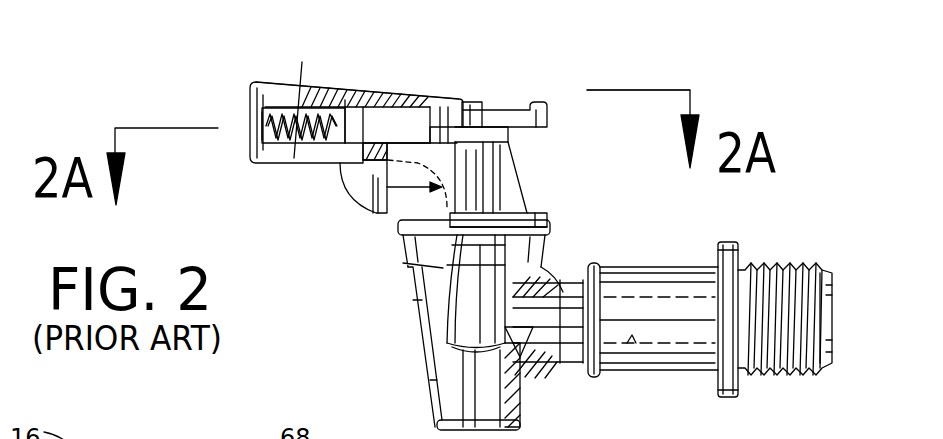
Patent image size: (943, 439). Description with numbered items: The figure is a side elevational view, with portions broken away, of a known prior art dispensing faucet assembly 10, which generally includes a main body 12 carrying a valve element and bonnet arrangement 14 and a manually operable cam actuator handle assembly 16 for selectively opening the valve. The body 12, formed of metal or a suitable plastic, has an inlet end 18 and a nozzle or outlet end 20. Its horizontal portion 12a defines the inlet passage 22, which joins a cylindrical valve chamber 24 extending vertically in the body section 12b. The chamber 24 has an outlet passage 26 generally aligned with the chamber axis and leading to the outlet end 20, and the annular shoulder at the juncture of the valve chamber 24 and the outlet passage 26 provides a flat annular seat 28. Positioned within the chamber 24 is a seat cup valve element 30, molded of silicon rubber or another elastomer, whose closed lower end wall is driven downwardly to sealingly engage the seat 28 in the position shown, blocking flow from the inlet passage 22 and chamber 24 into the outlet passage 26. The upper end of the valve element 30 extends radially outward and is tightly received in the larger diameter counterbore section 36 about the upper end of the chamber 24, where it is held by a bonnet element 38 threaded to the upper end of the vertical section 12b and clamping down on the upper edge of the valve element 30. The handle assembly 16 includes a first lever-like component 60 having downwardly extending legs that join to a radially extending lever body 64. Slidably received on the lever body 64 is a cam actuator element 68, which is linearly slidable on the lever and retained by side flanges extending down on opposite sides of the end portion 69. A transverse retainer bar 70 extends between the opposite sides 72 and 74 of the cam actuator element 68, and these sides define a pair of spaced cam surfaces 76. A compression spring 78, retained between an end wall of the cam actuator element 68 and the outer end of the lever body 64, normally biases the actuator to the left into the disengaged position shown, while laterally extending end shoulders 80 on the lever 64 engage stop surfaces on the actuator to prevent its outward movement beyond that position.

The faucet assembly 10 is at (612, 74).
The main body 12 is at (655, 248).
The horizontal portion 12a is at (665, 357).
The vertical body section 12b is at (418, 333).
The valve element and bonnet arrangement 14 is at (358, 256).
The cam actuator handle assembly 16 is at (468, 72).
The inlet end 18 is at (790, 375).
The outlet end 20 is at (440, 434).
The inlet passage 22 is at (620, 347).
The valve chamber 24 is at (507, 317).
The outlet passage 26 is at (448, 366).
The seat 28 is at (522, 342).
The seat cup valve element 30 is at (468, 298).
The counterbore section 36 is at (550, 232).
The bonnet element 38 is at (540, 217).
The first lever-like component 60 is at (483, 134).
The lever body 64 is at (383, 125).
The cam actuator element 68 is at (236, 96).
The end portion 69 is at (508, 113).
The transverse retainer bar 70 is at (363, 153).
The side of cam actuator element 72 is at (302, 148).
The side of cam actuator element 74 is at (245, 157).
The cam surfaces 76 is at (345, 187).
The compression spring 78 is at (305, 97).
The end shoulders 80 is at (348, 100).